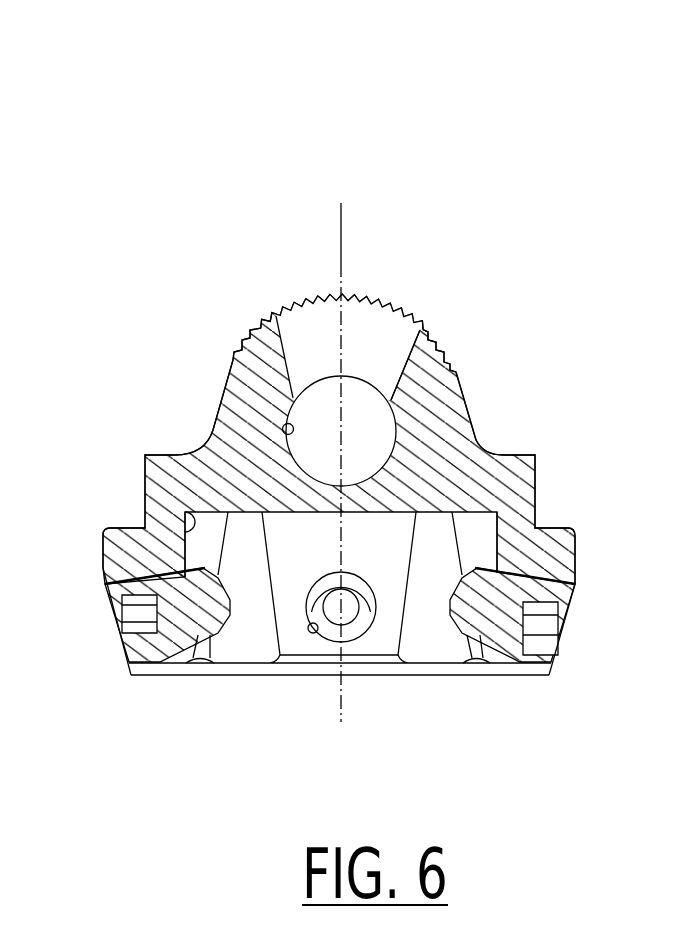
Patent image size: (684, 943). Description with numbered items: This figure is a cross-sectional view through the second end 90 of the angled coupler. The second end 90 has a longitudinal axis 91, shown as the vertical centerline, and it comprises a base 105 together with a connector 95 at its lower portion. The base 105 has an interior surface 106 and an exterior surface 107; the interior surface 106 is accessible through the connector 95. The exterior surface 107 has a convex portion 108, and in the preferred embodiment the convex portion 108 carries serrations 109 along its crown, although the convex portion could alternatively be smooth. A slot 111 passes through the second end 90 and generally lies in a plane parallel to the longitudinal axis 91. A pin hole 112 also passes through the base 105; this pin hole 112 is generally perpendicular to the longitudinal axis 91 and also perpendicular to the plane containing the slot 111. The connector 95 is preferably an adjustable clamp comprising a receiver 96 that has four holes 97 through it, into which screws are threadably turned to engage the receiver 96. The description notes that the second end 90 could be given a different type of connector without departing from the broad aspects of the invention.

The second end 90 is at (335, 419).
The longitudinal axis 91 is at (336, 230).
The connector 95 is at (488, 676).
The receiver 96 is at (373, 676).
The holes 97 is at (123, 643).
The base 105 is at (537, 510).
The interior surface 106 is at (158, 513).
The exterior surface 107 is at (474, 434).
The convex portion 108 is at (458, 380).
The serrations 109 is at (427, 327).
The slot 111 is at (290, 327).
The pin hole 112 is at (287, 438).